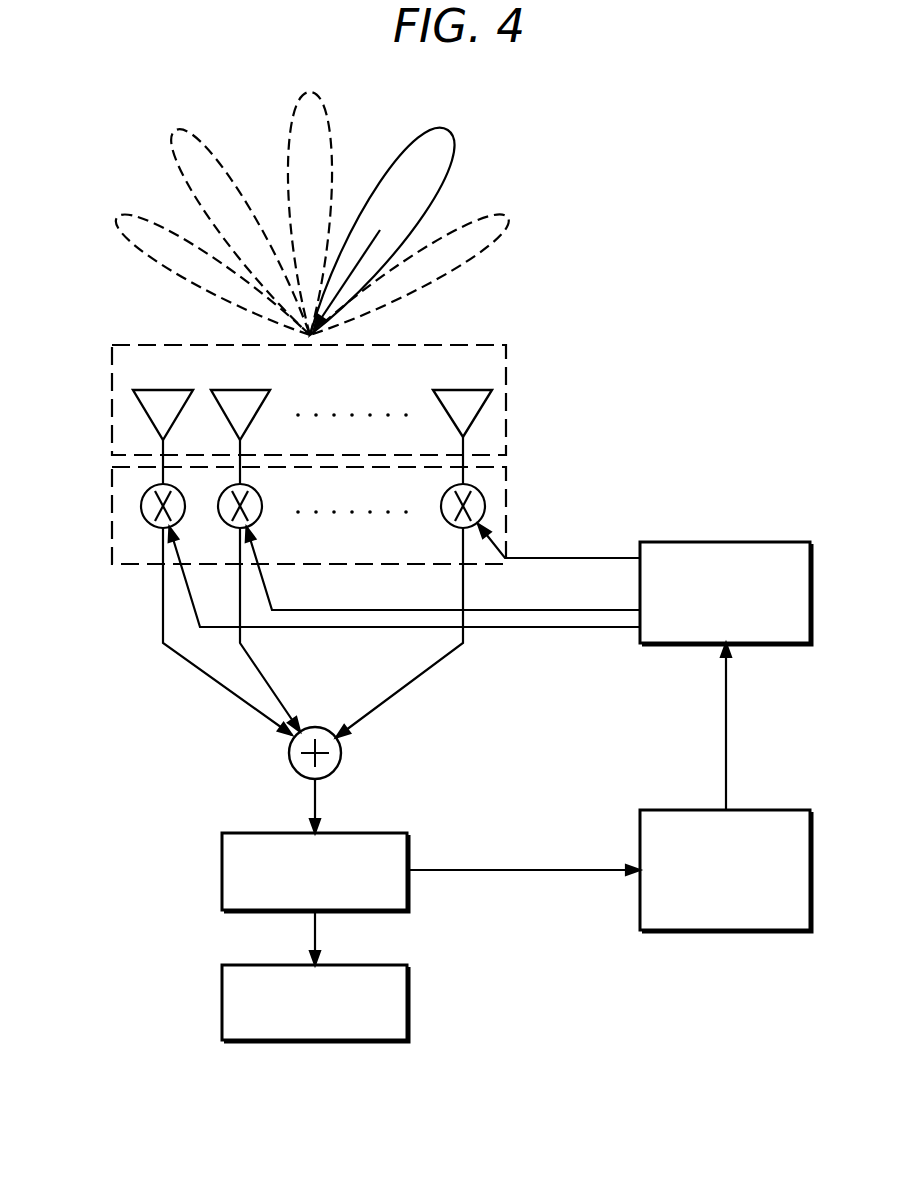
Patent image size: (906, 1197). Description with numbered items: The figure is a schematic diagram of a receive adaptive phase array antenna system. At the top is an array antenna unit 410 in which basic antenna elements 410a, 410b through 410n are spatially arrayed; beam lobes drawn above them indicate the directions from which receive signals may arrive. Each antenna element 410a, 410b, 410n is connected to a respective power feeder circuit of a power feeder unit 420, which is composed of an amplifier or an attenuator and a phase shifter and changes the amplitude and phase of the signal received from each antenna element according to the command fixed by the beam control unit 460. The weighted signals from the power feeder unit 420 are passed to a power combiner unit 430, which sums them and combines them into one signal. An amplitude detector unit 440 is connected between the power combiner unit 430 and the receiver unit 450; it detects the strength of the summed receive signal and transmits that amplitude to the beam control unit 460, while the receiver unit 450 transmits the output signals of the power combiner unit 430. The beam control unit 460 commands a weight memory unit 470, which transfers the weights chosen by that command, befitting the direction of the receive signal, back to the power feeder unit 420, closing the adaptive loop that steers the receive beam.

The array antenna unit 410 is at (112, 401).
The antenna element 410a is at (163, 421).
The antenna element 410b is at (242, 421).
The antenna element 410n is at (462, 421).
The power feeder unit 420 is at (112, 512).
The power combiner unit 430 is at (342, 753).
The amplitude detector unit 440 is at (222, 868).
The receiver unit 450 is at (408, 1002).
The beam control unit 460 is at (725, 931).
The weight memory unit 470 is at (727, 542).